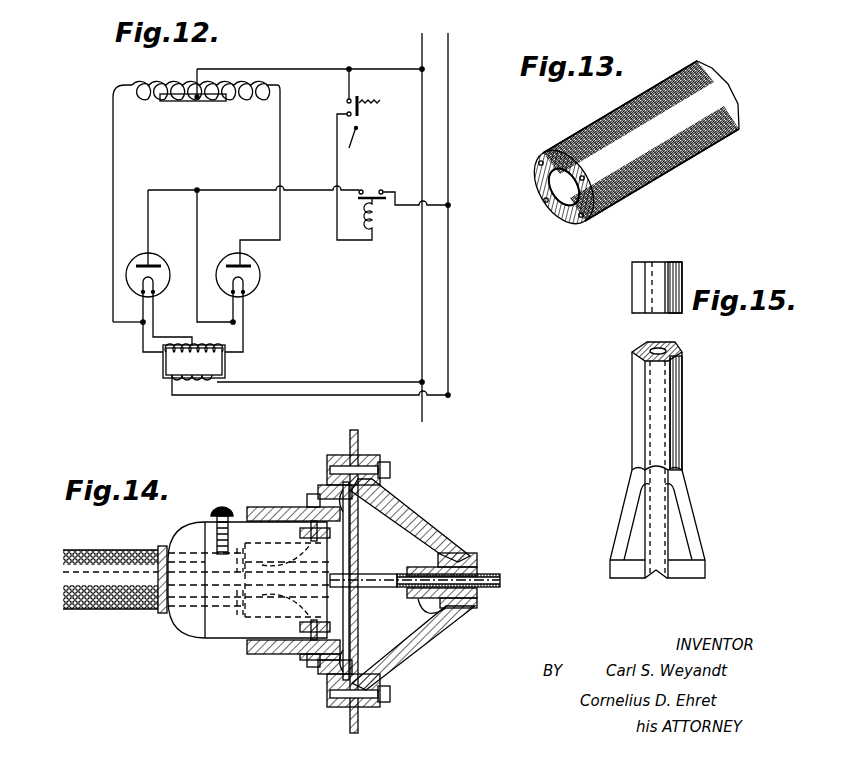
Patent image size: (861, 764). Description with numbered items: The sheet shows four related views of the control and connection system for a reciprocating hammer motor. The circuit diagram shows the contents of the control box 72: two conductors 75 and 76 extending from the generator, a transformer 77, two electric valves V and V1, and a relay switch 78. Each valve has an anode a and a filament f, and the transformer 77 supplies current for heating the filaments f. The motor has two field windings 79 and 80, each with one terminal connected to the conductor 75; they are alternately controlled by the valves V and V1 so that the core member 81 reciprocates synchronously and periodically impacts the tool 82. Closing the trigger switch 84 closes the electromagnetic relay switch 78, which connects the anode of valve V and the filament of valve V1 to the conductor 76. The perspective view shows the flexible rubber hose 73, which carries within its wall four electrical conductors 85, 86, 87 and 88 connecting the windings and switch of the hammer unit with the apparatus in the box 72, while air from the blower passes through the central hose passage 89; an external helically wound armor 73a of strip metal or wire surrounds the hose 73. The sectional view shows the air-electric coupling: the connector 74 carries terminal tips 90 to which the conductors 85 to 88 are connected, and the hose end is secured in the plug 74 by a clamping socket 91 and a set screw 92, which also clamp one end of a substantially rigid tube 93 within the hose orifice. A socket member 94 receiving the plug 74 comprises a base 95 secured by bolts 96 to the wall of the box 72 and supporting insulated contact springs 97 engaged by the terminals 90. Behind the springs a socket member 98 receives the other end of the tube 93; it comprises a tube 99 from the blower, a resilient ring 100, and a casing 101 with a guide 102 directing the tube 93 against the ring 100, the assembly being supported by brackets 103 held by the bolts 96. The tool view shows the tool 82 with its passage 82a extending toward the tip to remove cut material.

In FIG. 14, the control box 72 is at (352, 432).
In FIG. 13, the flexible rubber hose 73 is at (630, 147).
In FIG. 14, the flexible rubber hose 73 is at (66, 568).
In FIG. 13, the external helically wound armor 73a is at (612, 108).
In FIG. 14, the external helically wound armor 73a is at (100, 610).
In FIG. 14, the connector 74 is at (215, 645).
In FIG. 12, the conductor 75 is at (422, 310).
In FIG. 12, the conductor 76 is at (448, 285).
In FIG. 12, the transformer 77 is at (168, 362).
In FIG. 12, the relay switch 78 is at (378, 230).
In FIG. 12, the field winding 79 is at (160, 86).
In FIG. 12, the field winding 80 is at (250, 100).
In FIG. 12, the core member 81 is at (185, 102).
In FIG. 15, the tool 82 is at (698, 300).
In FIG. 15, the tool passage 82a is at (663, 273).
In FIG. 12, the trigger switch 84 is at (347, 101).
In FIG. 12, the electrical conductor 85 is at (384, 69).
In FIG. 13, the electrical conductor 85 is at (540, 162).
In FIG. 14, the electrical conductor 85 is at (265, 598).
In FIG. 12, the electrical conductor 86 is at (113, 172).
In FIG. 13, the electrical conductor 86 is at (544, 200).
In FIG. 12, the electrical conductor 87 is at (280, 156).
In FIG. 13, the electrical conductor 87 is at (584, 176).
In FIG. 12, the electrical conductor 88 is at (337, 160).
In FIG. 13, the electrical conductor 88 is at (584, 217).
In FIG. 14, the electrical conductor 88 is at (255, 565).
In FIG. 13, the central hose passage 89 is at (562, 205).
In FIG. 14, the terminal tips 90 is at (308, 506).
In FIG. 14, the clamping socket 91 is at (162, 546).
In FIG. 14, the set screw 92 is at (212, 508).
In FIG. 14, the rigid tube 93 is at (365, 574).
In FIG. 14, the socket member 94 is at (272, 507).
In FIG. 14, the base 95 is at (325, 475).
In FIG. 14, the bolts 96 is at (388, 462).
In FIG. 14, the contact springs 97 is at (410, 520).
In FIG. 14, the socket member 98 is at (435, 555).
In FIG. 14, the tube 99 is at (495, 574).
In FIG. 14, the resilient ring 100 is at (445, 605).
In FIG. 14, the casing 101 is at (462, 598).
In FIG. 14, the guide 102 is at (440, 612).
In FIG. 14, the brackets 103 is at (385, 480).
In FIG. 12, the electric valve V is at (126, 270).
In FIG. 12, the electric valve V1 is at (262, 280).
In FIG. 12, the anode a is at (142, 264).
In FIG. 12, the filament f is at (141, 286).